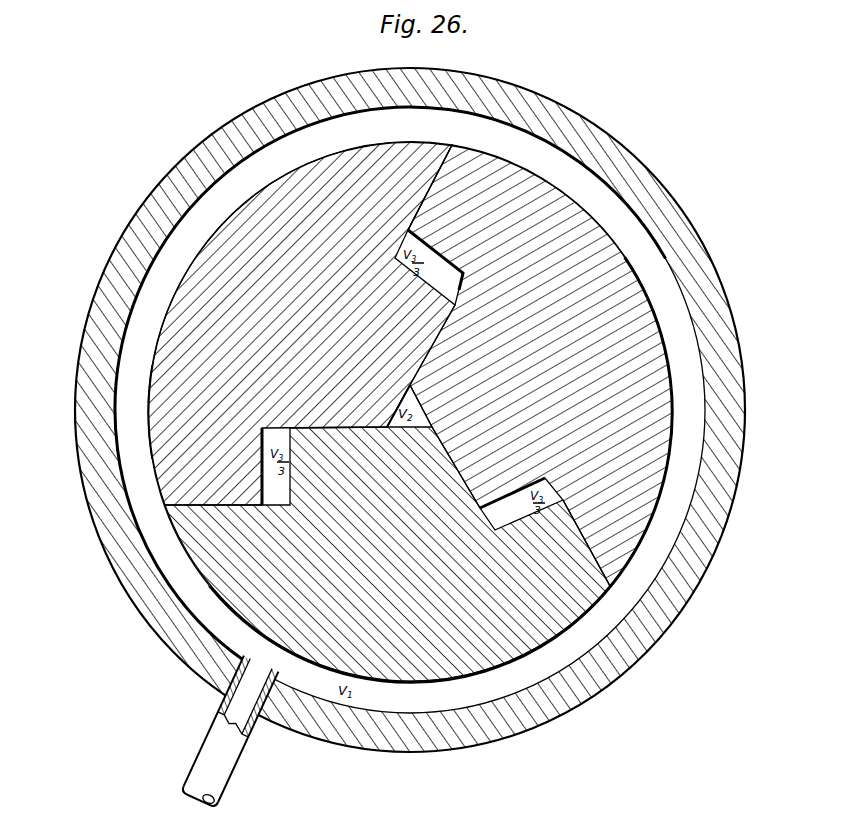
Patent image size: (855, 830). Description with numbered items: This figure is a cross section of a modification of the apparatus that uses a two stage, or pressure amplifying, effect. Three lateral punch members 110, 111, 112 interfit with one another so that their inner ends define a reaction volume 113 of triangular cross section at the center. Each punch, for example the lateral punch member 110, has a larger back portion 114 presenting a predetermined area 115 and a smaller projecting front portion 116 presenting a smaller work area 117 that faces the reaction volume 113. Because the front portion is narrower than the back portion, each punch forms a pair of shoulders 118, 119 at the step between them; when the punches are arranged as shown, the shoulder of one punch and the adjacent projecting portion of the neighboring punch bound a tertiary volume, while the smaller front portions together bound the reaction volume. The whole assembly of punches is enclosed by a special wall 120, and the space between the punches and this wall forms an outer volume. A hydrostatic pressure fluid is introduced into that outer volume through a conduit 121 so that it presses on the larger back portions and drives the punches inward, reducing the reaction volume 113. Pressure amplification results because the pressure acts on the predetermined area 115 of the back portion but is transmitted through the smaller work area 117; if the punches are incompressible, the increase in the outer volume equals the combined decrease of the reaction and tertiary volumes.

The lateral punch member 110 is at (145, 420).
The lateral punch member 111 is at (648, 289).
The lateral punch member 112 is at (450, 684).
The reaction volume 113 is at (433, 412).
The larger back portion 114 is at (302, 323).
The predetermined area 115 is at (162, 315).
The smaller projecting front portion 116 is at (525, 365).
The smaller work area 117 is at (387, 424).
The shoulder 118 is at (210, 507).
The shoulder 119 is at (426, 193).
The special wall 120 is at (645, 624).
The conduit 121 is at (202, 748).